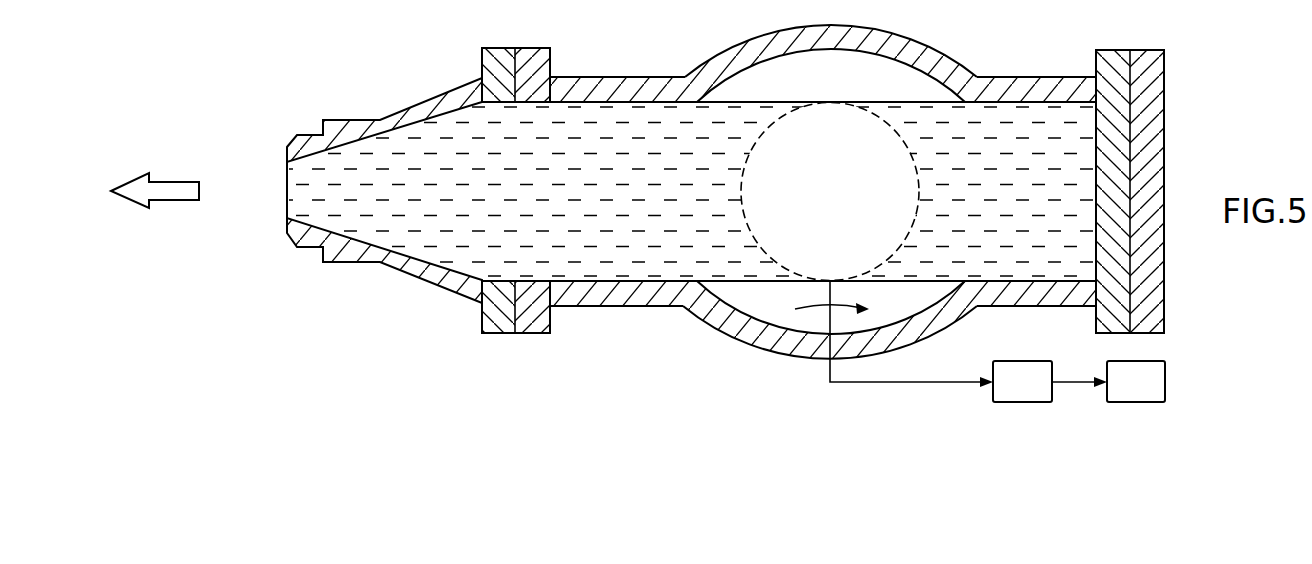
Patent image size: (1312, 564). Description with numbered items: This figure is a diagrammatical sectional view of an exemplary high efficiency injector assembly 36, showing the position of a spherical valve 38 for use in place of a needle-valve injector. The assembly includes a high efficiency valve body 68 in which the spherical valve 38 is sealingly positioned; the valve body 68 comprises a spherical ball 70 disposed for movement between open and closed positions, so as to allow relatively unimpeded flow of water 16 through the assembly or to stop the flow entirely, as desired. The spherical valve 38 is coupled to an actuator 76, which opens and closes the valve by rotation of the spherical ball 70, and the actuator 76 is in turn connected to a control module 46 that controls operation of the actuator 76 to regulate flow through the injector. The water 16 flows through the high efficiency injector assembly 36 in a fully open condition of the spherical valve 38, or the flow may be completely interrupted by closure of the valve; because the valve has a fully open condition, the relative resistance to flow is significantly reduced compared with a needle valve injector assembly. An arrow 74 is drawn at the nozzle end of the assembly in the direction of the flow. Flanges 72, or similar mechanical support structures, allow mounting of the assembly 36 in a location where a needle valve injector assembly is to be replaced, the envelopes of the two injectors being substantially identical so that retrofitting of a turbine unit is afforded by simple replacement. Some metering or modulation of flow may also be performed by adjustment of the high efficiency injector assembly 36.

The high efficiency injector assembly 36 is at (208, 82).
The spherical valve 38 is at (398, 98).
The water 16 is at (405, 253).
The high efficiency valve body 68 is at (908, 45).
The spherical ball 70 is at (843, 204).
The flanges 72 is at (483, 318).
The flow direction arrow 74 is at (173, 203).
The actuator 76 is at (1025, 361).
The control module 46 is at (1166, 382).